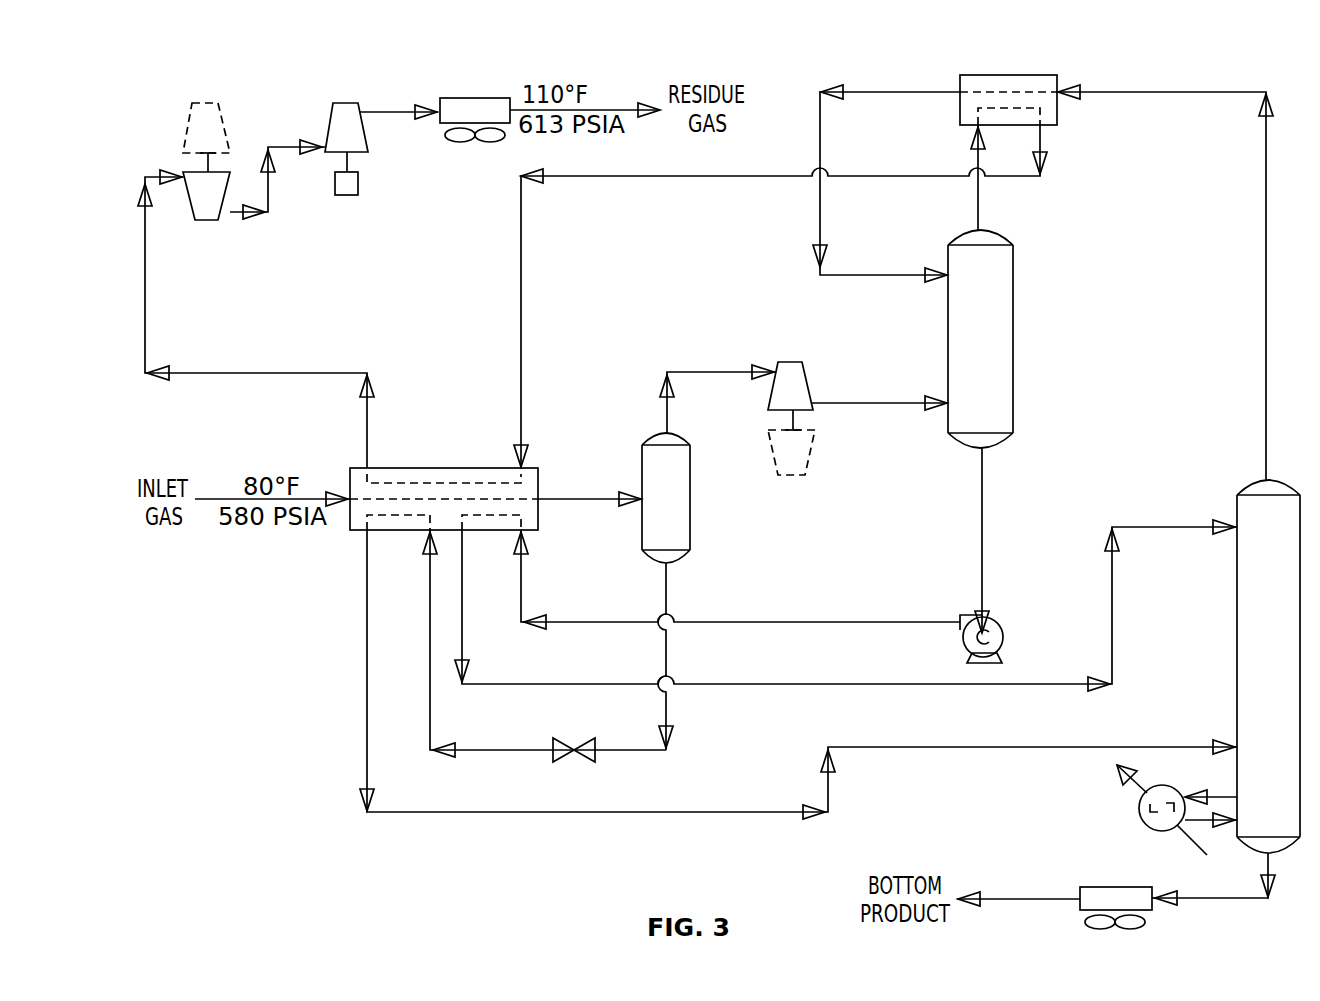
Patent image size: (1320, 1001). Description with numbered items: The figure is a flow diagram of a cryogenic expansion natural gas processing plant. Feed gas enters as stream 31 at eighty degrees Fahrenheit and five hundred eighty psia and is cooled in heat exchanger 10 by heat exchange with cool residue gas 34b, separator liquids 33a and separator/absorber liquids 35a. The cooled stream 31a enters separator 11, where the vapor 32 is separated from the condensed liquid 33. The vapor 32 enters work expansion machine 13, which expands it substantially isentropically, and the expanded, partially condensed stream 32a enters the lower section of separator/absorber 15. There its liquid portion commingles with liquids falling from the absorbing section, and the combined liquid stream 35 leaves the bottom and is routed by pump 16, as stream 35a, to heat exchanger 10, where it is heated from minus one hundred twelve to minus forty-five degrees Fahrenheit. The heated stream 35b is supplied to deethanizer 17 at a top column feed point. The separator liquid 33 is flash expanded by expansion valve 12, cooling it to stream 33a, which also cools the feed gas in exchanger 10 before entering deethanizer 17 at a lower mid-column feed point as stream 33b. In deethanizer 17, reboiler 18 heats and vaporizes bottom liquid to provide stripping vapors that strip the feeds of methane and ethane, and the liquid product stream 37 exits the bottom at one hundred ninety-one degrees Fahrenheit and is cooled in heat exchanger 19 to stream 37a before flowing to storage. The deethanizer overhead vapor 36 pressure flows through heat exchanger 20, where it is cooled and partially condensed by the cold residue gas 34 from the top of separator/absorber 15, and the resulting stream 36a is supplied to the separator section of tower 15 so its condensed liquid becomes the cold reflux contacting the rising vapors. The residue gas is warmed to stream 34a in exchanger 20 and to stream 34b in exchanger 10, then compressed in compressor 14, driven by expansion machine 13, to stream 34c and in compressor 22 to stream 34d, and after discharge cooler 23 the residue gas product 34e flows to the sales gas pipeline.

The heat exchanger 10 is at (445, 468).
The separator 11 is at (692, 528).
The expansion valve 12 is at (557, 740).
The work expansion machine 13 is at (207, 103).
The compressor 14 is at (207, 222).
The separator/absorber 15 is at (1015, 368).
The pump 16 is at (1003, 652).
The deethanizer 17 is at (1237, 682).
The reboiler 18 is at (1138, 808).
The heat exchanger 19 is at (1117, 887).
The heat exchanger 20 is at (960, 108).
The compressor 22 is at (346, 103).
The discharge cooler 23 is at (475, 98).
The feed gas stream 31 is at (210, 498).
The cooled stream 31a is at (587, 515).
The vapor stream 32 is at (713, 375).
The expanded stream 32a is at (878, 423).
The condensed liquid stream 33 is at (670, 590).
The expanded separator liquid stream 33a is at (503, 768).
The warmed separator liquid stream 33b is at (1018, 763).
The cold residue gas stream 34 is at (993, 207).
The warmed residue gas stream 34a is at (662, 195).
The further warmed residue gas stream 34b is at (240, 395).
The first-stage compressed residue gas stream 34c is at (270, 183).
The compressed residue gas stream 34d is at (393, 110).
The residue gas product stream 34e is at (623, 108).
The combined liquid stream 35 is at (1000, 527).
The pumped combined liquid stream 35a is at (827, 638).
The heated combined liquid stream 35b is at (1165, 545).
The deethanizer overhead vapor stream 36 is at (1167, 112).
The cooled deethanizer overhead stream 36a is at (877, 293).
The liquid product stream 37 is at (1228, 915).
The cooled liquid product stream 37a is at (1020, 915).